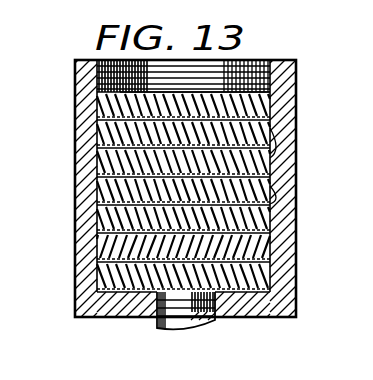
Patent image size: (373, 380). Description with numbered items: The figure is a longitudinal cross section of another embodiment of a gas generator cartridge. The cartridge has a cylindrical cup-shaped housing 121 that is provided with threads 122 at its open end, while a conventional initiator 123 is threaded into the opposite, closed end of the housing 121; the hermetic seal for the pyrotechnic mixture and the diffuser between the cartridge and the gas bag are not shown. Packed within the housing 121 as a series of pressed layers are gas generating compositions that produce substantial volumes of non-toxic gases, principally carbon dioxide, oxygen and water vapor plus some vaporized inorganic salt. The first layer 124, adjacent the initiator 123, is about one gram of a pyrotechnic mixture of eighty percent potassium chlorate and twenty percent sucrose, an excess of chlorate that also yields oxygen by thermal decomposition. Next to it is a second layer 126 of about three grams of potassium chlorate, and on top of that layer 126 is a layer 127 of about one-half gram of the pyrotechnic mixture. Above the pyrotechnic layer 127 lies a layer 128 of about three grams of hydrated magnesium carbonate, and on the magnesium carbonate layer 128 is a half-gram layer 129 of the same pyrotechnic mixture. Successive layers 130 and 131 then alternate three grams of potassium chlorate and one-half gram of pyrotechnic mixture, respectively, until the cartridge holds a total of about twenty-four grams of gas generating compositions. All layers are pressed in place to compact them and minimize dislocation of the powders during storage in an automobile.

The housing 121 is at (290, 210).
The threads 122 is at (249, 70).
The initiator 123 is at (213, 326).
The first layer 124 is at (282, 290).
The second layer 126 is at (99, 280).
The pyrotechnic mixture layer 127 is at (272, 262).
The hydrated magnesium carbonate layer 128 is at (97, 253).
The pyrotechnic mixture layer 129 is at (272, 239).
The potassium chlorate layer 130 is at (97, 162).
The pyrotechnic mixture layer 131 is at (271, 103).